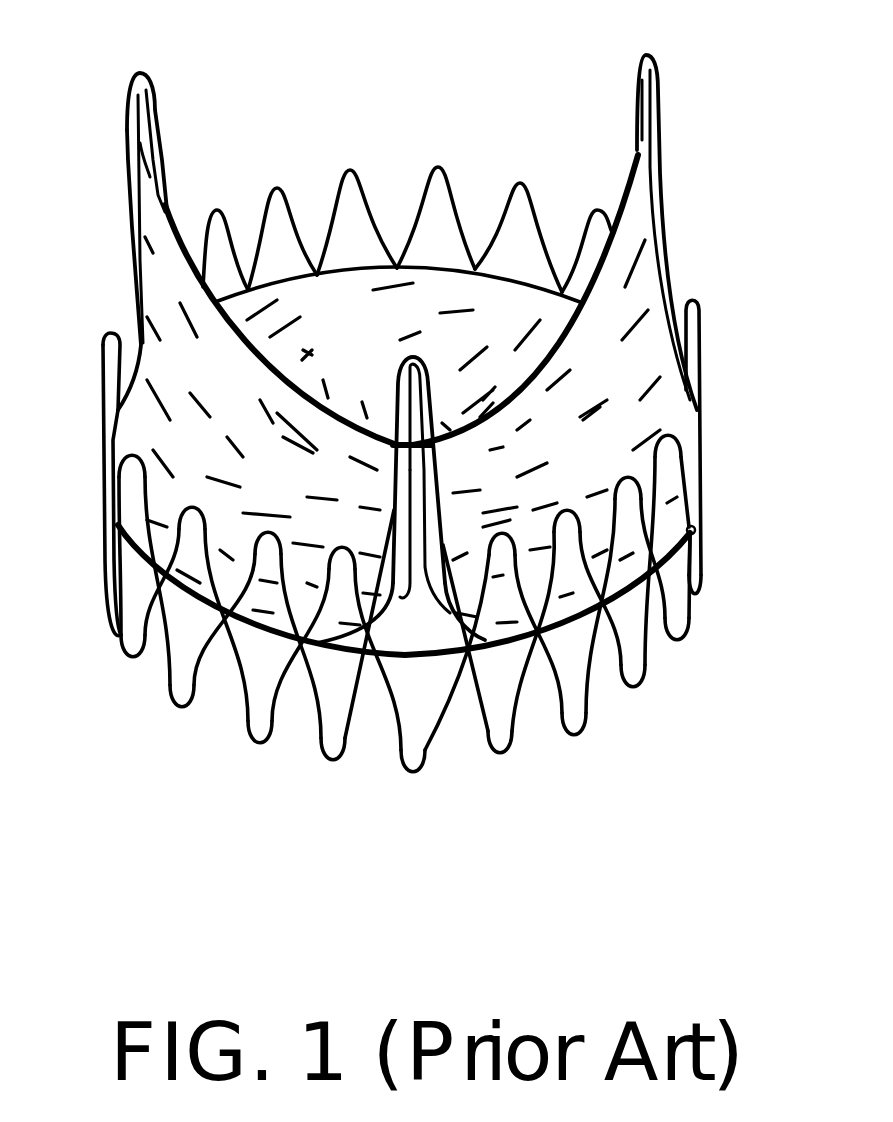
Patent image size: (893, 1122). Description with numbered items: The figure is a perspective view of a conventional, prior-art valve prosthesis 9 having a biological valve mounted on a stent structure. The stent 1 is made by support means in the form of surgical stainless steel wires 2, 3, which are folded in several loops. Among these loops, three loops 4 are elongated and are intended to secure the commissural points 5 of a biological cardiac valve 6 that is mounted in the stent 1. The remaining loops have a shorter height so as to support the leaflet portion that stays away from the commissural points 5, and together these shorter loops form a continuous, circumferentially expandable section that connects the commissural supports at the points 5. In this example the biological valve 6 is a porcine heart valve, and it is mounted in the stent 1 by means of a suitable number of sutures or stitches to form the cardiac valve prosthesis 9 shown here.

The stent 1 is at (92, 343).
The surgical stainless steel wire 2 is at (447, 167).
The surgical stainless steel wire 3 is at (188, 704).
The elongated loops 4 is at (140, 70).
The commissural points 5 is at (133, 172).
The biological cardiac valve 6 is at (320, 295).
The valve prosthesis 9 is at (728, 381).